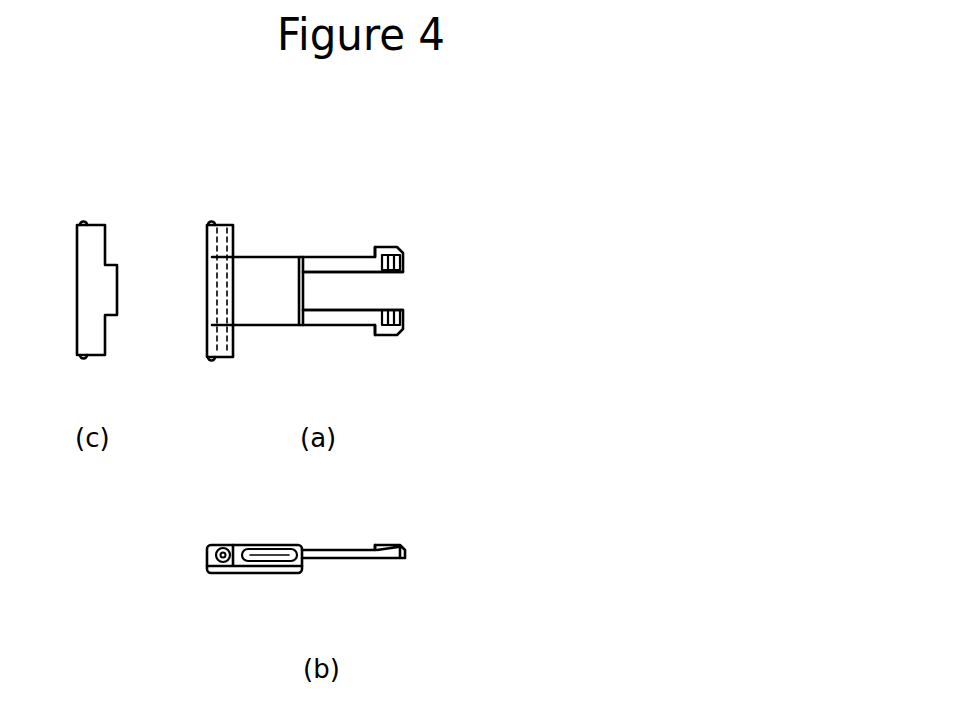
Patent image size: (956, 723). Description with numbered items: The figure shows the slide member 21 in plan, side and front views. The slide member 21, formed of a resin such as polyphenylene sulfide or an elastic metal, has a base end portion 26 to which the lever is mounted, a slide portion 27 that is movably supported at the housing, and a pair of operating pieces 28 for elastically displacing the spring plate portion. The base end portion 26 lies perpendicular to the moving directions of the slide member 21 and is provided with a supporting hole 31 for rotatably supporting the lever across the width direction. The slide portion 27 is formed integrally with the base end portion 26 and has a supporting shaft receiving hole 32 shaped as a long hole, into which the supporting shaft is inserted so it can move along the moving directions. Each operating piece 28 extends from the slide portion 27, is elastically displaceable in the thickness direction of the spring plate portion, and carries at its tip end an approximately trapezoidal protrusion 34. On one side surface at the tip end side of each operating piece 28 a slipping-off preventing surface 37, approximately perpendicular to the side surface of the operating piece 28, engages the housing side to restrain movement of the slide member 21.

The slide member 21 is at (438, 381).
The base end portion 26 is at (95, 235).
The slide portion 27 is at (258, 277).
The operating piece 28 is at (328, 551).
The supporting hole 31 is at (215, 357).
The supporting shaft receiving hole 32 is at (283, 558).
The protrusion 34 is at (405, 312).
The slipping-off preventing surface 37 is at (367, 548).